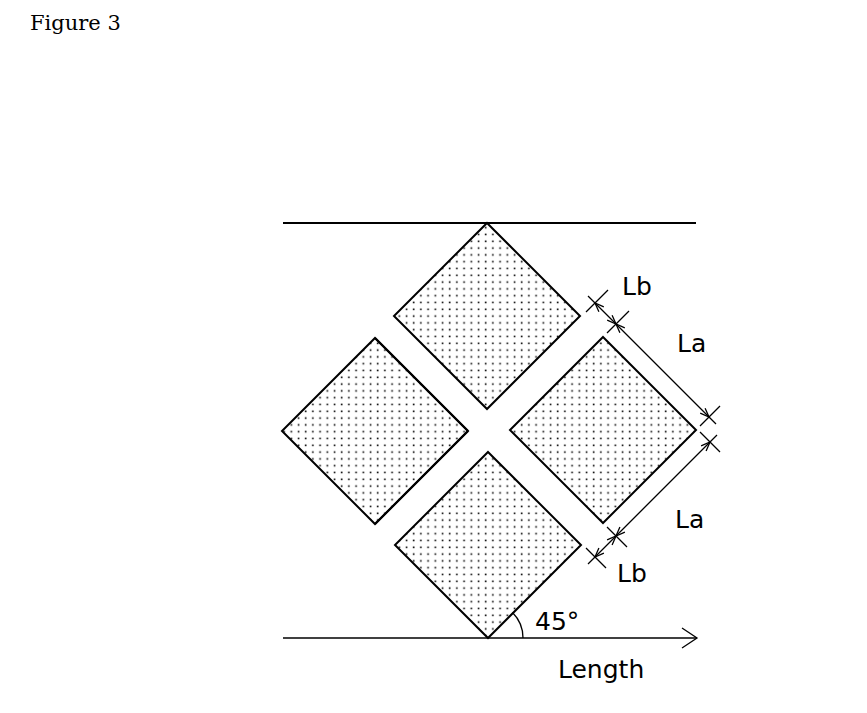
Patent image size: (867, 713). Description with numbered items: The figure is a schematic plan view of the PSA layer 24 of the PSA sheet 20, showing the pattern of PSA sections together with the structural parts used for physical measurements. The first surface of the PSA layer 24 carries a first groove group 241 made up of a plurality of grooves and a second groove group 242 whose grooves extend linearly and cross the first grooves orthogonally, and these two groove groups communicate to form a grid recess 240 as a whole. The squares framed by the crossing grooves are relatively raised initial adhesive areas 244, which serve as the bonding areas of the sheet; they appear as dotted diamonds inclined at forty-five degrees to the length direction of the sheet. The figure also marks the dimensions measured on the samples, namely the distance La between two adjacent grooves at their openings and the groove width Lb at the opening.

The PSA sheet 20 is at (782, 245).
The PSA layer 24 is at (522, 258).
The grid recess 240 is at (176, 348).
The first groove group 241 is at (394, 338).
The second groove group 242 is at (402, 520).
The initial adhesive area 244 is at (447, 303).